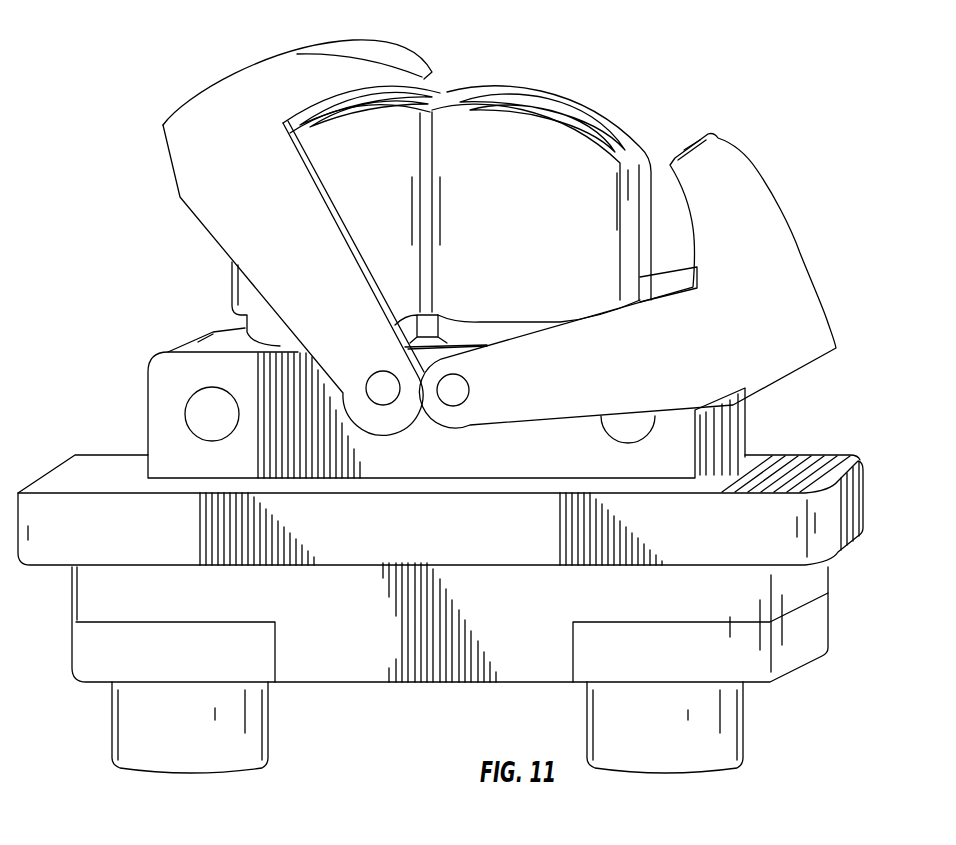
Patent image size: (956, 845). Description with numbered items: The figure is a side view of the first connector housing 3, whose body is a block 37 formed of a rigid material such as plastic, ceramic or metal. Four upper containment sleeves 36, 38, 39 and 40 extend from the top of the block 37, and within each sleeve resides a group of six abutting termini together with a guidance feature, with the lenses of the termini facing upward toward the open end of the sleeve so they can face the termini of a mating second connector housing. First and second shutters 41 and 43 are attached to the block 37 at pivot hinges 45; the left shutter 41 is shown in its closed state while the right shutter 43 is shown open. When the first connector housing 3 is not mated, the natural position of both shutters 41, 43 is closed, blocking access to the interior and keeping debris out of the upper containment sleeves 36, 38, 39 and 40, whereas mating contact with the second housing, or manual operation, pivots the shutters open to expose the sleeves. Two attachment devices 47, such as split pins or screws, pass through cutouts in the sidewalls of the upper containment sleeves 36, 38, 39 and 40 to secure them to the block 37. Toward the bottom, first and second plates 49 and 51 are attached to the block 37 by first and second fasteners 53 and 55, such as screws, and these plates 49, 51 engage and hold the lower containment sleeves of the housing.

The first connector housing 3 is at (112, 402).
The upper containment sleeve 36 is at (374, 200).
The block 37 is at (370, 653).
The upper containment sleeve 38 is at (531, 223).
The upper containment sleeve 39 is at (648, 178).
The upper containment sleeve 40 is at (432, 70).
The first shutter 41 is at (178, 155).
The second shutter 43 is at (817, 338).
The pivot hinges 45 is at (383, 392).
The attachment devices 47 is at (212, 387).
The first plate 49 is at (107, 652).
The second plate 51 is at (807, 633).
The first fastener 53 is at (190, 745).
The second fastener 55 is at (663, 729).